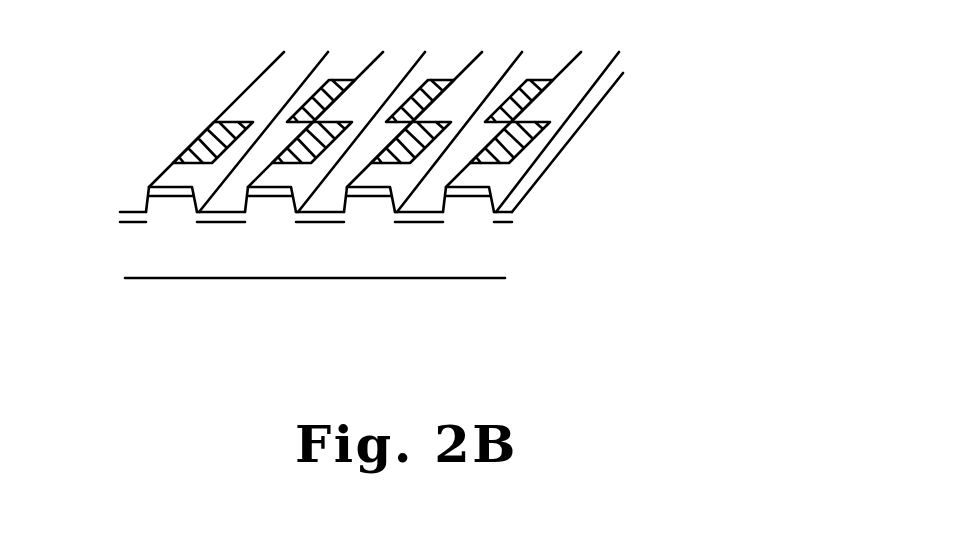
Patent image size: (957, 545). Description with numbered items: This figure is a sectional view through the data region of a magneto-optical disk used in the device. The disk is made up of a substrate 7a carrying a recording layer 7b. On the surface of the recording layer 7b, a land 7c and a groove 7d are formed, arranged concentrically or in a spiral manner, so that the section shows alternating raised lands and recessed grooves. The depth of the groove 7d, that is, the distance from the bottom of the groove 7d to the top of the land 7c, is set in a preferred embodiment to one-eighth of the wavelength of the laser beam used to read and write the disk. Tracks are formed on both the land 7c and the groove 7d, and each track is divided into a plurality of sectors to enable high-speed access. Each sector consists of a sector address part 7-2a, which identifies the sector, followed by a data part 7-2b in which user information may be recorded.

The sector address part 7-2a is at (497, 96).
The data part 7-2b is at (546, 102).
The substrate 7a is at (365, 237).
The recording layer 7b is at (500, 222).
The land 7c is at (162, 214).
The groove 7d is at (222, 236).